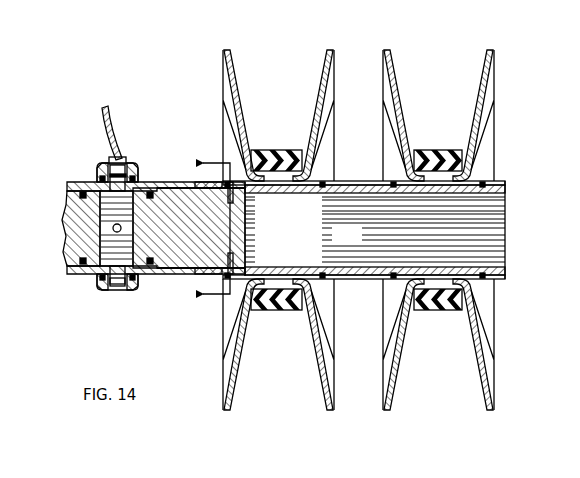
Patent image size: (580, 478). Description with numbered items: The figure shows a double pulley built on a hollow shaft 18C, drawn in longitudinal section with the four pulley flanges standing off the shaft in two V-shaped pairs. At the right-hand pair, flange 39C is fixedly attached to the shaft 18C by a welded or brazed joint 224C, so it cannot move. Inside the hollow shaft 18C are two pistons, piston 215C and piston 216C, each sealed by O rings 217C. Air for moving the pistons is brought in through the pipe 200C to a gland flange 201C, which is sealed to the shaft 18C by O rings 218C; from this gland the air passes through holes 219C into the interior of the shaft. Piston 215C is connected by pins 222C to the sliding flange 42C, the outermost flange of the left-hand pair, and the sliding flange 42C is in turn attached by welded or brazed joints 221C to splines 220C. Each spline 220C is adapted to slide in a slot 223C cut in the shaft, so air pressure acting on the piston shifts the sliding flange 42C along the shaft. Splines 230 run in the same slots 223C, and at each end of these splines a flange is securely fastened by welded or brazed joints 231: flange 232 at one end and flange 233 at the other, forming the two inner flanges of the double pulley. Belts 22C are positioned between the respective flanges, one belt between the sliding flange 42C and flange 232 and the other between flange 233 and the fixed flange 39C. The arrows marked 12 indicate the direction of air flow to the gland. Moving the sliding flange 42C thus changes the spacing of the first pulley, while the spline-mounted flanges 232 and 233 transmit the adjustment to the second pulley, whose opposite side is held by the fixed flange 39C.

The flow direction 12 is at (208, 229).
The shaft 18C is at (497, 192).
The belt 22C is at (275, 153).
The flange 39C is at (482, 137).
The sliding flange 42C is at (230, 68).
The pipe 200C is at (113, 118).
The flange 201C is at (110, 170).
The piston 215C is at (210, 240).
The piston 216C is at (78, 241).
The O ring 217C is at (147, 203).
The O ring 218C is at (133, 170).
The hole 219C is at (80, 226).
The spline 220C is at (243, 213).
The welded or brazed joint 221C is at (245, 176).
The pin 222C is at (240, 206).
The slot 223C is at (163, 182).
The welded or brazed joint 224C is at (468, 167).
The spline 230 is at (345, 183).
The welded or brazed joint 231 is at (385, 270).
The flange 232 is at (323, 75).
The flange 233 is at (385, 72).